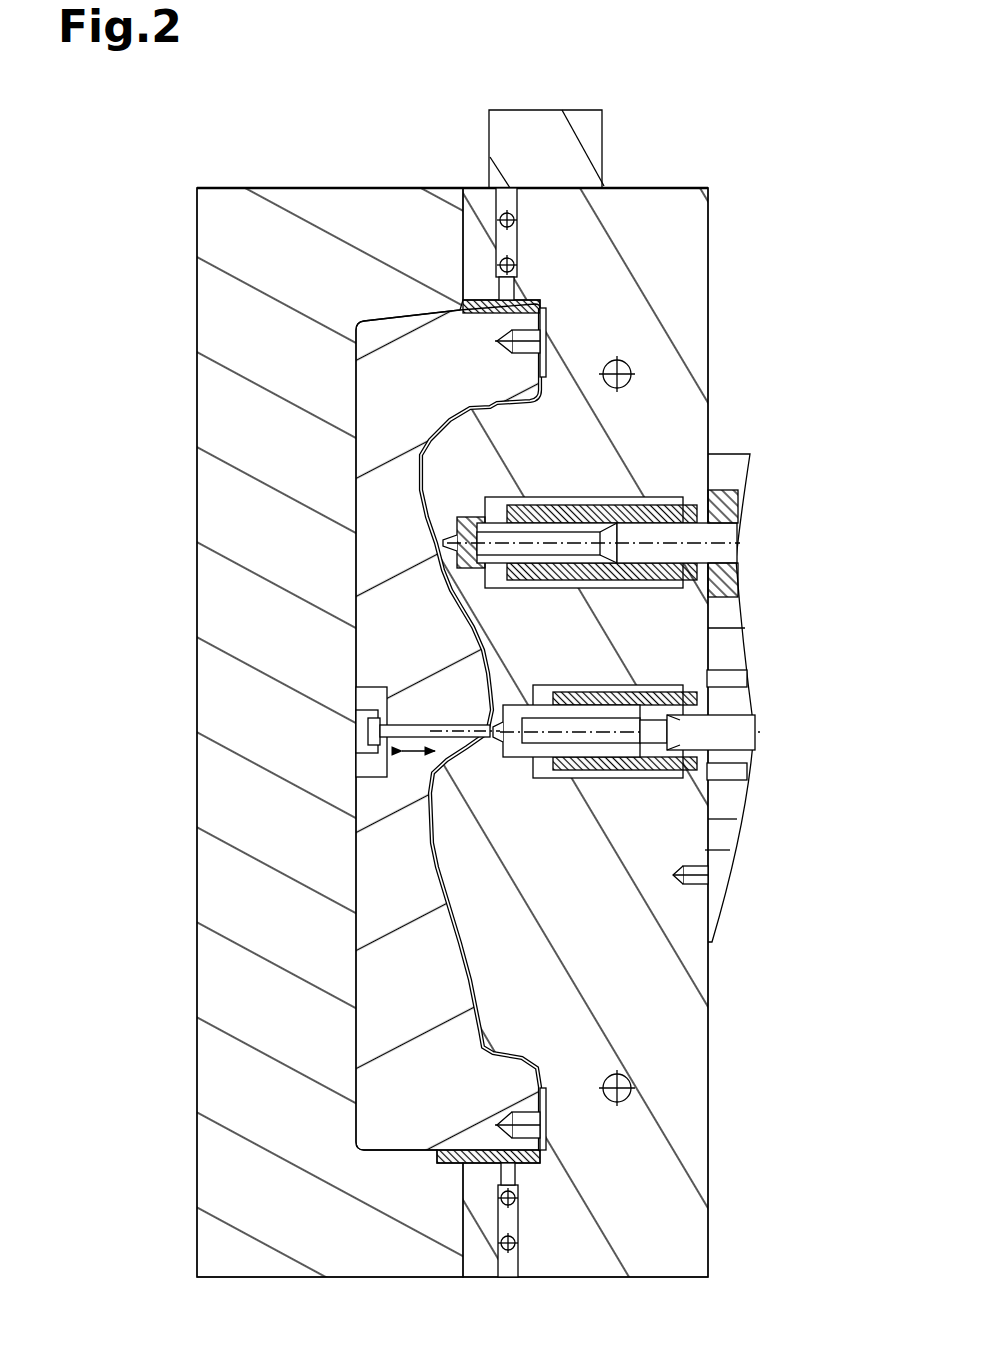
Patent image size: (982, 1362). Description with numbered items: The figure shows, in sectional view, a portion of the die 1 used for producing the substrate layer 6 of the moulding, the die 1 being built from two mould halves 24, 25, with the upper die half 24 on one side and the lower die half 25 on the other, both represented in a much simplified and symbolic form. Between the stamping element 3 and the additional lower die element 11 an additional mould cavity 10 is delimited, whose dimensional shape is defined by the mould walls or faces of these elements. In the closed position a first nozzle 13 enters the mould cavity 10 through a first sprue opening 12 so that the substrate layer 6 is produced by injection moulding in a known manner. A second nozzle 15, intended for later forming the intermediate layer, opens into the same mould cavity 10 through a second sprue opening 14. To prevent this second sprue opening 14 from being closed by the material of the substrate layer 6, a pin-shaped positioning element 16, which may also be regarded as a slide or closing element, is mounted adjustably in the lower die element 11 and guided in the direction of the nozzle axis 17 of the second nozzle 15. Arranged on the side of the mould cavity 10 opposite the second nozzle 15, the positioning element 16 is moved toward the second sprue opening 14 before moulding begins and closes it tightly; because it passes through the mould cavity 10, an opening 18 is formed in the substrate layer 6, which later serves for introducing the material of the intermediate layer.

The die 1 is at (321, 117).
The stamping element 3 is at (492, 826).
The substrate layer 6 is at (446, 603).
The mould cavity 10 is at (438, 853).
The lower die element 11 is at (387, 890).
The first sprue opening 12 is at (450, 519).
The first nozzle 13 is at (596, 489).
The second sprue opening 14 is at (507, 698).
The second nozzle 15 is at (630, 784).
The positioning element 16 is at (420, 724).
The nozzle axis 17 is at (727, 726).
The opening 18 is at (483, 733).
The upper die half 24 is at (203, 181).
The lower die half 25 is at (702, 181).